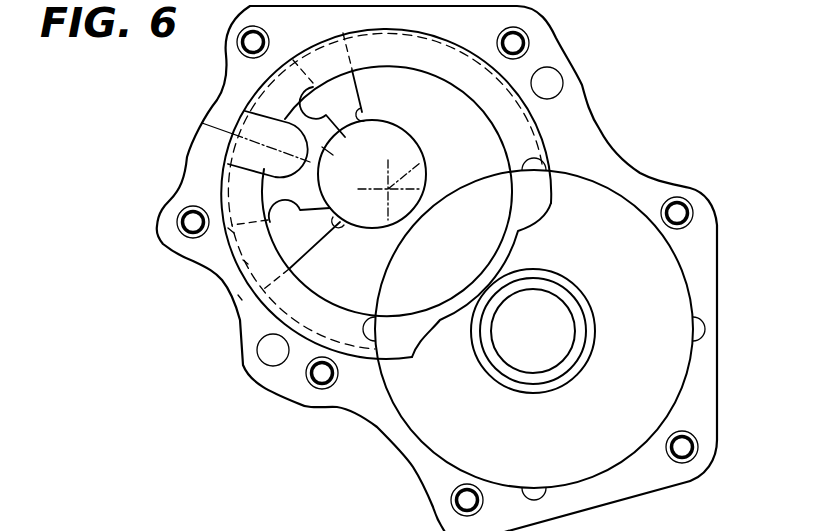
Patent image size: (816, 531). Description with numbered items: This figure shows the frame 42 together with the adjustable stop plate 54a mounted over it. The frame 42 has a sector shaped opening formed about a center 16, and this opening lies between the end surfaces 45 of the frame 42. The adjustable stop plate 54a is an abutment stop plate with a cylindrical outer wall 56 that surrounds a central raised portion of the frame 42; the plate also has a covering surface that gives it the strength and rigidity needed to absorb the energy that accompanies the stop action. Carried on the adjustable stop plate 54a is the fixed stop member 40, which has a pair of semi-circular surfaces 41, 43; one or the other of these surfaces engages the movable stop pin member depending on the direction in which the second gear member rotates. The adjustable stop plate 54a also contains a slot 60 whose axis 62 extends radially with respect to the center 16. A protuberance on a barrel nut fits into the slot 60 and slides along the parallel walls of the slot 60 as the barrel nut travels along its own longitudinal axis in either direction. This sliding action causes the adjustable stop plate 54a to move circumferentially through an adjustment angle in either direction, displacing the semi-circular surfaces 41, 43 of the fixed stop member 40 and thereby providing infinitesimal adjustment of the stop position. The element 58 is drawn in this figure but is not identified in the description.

The center 16 is at (422, 166).
The fixed stop member 40 is at (322, 147).
The semi-circular surface 41 is at (327, 85).
The frame 42 is at (243, 323).
The semi-circular surface 43 is at (337, 227).
The end surfaces 45 is at (339, 216).
The adjustable stop plate 54a is at (230, 230).
The cylindrical outer wall 56 is at (245, 262).
The flange edge 58 is at (240, 297).
The slot 60 is at (245, 116).
The axis 62 is at (215, 150).